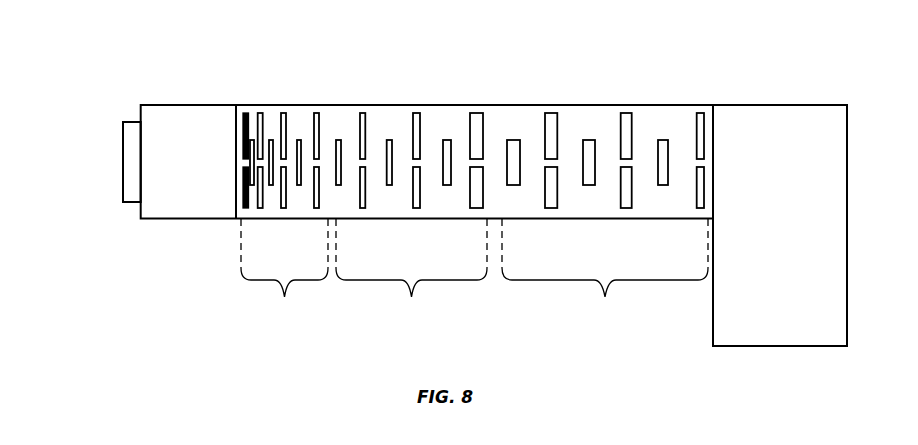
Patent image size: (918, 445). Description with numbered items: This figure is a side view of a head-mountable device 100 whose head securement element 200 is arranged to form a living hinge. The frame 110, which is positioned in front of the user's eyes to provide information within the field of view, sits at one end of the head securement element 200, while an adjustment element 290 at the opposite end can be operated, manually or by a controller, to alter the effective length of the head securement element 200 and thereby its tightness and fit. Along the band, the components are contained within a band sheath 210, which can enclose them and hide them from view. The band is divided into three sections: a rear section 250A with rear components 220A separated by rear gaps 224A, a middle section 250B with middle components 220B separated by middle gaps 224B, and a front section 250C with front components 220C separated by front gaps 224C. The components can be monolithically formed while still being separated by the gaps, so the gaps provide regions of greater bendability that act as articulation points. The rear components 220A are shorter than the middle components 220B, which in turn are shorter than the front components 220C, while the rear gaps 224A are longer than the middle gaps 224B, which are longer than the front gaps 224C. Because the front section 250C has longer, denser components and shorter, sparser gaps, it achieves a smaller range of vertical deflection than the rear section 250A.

The head-mountable device 100 is at (112, 70).
The frame 110 is at (777, 103).
The head securement element 200 is at (185, 104).
The band sheath 210 is at (243, 103).
The rear components 220A is at (297, 127).
The rear gaps 224A is at (312, 113).
The middle components 220B is at (428, 117).
The middle gaps 224B is at (447, 137).
The front components 220C is at (640, 117).
The front gaps 224C is at (660, 138).
The rear section 250A is at (284, 271).
The middle section 250B is at (411, 271).
The front section 250C is at (605, 271).
The adjustment element 290 is at (123, 165).